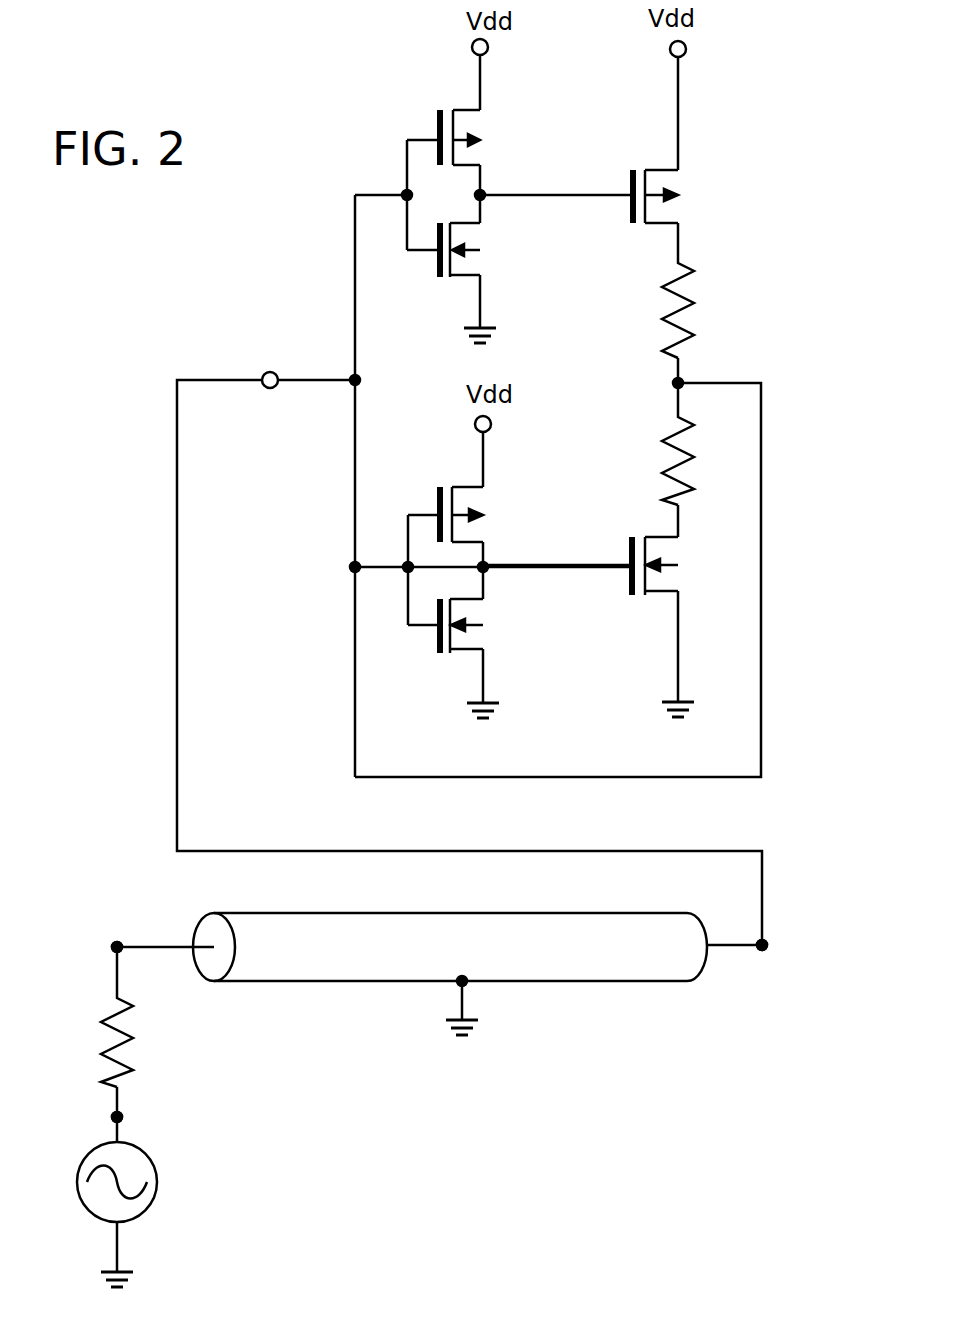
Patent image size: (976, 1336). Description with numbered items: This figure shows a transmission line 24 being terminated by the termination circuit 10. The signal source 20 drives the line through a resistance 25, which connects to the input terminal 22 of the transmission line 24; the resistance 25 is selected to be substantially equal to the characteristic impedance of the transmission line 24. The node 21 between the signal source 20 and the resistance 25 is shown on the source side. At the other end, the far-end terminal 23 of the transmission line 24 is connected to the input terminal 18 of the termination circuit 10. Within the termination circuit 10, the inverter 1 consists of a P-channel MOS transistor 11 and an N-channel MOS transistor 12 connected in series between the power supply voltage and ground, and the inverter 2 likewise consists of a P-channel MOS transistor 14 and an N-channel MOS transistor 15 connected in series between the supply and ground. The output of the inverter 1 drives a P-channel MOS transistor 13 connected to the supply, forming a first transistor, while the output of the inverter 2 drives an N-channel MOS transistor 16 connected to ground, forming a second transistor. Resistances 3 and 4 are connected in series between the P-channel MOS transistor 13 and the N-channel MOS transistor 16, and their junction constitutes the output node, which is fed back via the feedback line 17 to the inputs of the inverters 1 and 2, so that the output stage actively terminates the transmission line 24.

The termination circuit 10 is at (792, 80).
The inverter 1 is at (400, 311).
The inverter 2 is at (410, 673).
The P-channel MOS transistor 11 is at (475, 133).
The N-channel MOS transistor 12 is at (480, 258).
The P-channel MOS transistor 13 is at (673, 184).
The P-channel MOS transistor 14 is at (481, 508).
The N-channel MOS transistor 15 is at (487, 614).
The N-channel MOS transistor 16 is at (677, 560).
The resistance 3 is at (700, 291).
The resistance 4 is at (672, 463).
The feedback line 17 is at (538, 772).
The input terminal 18 is at (268, 370).
The signal source 20 is at (160, 1183).
The node 21 is at (125, 1115).
The input terminal 22 is at (114, 944).
The far-end terminal 23 is at (765, 948).
The transmission line 24 is at (560, 904).
The resistance 25 is at (113, 1042).